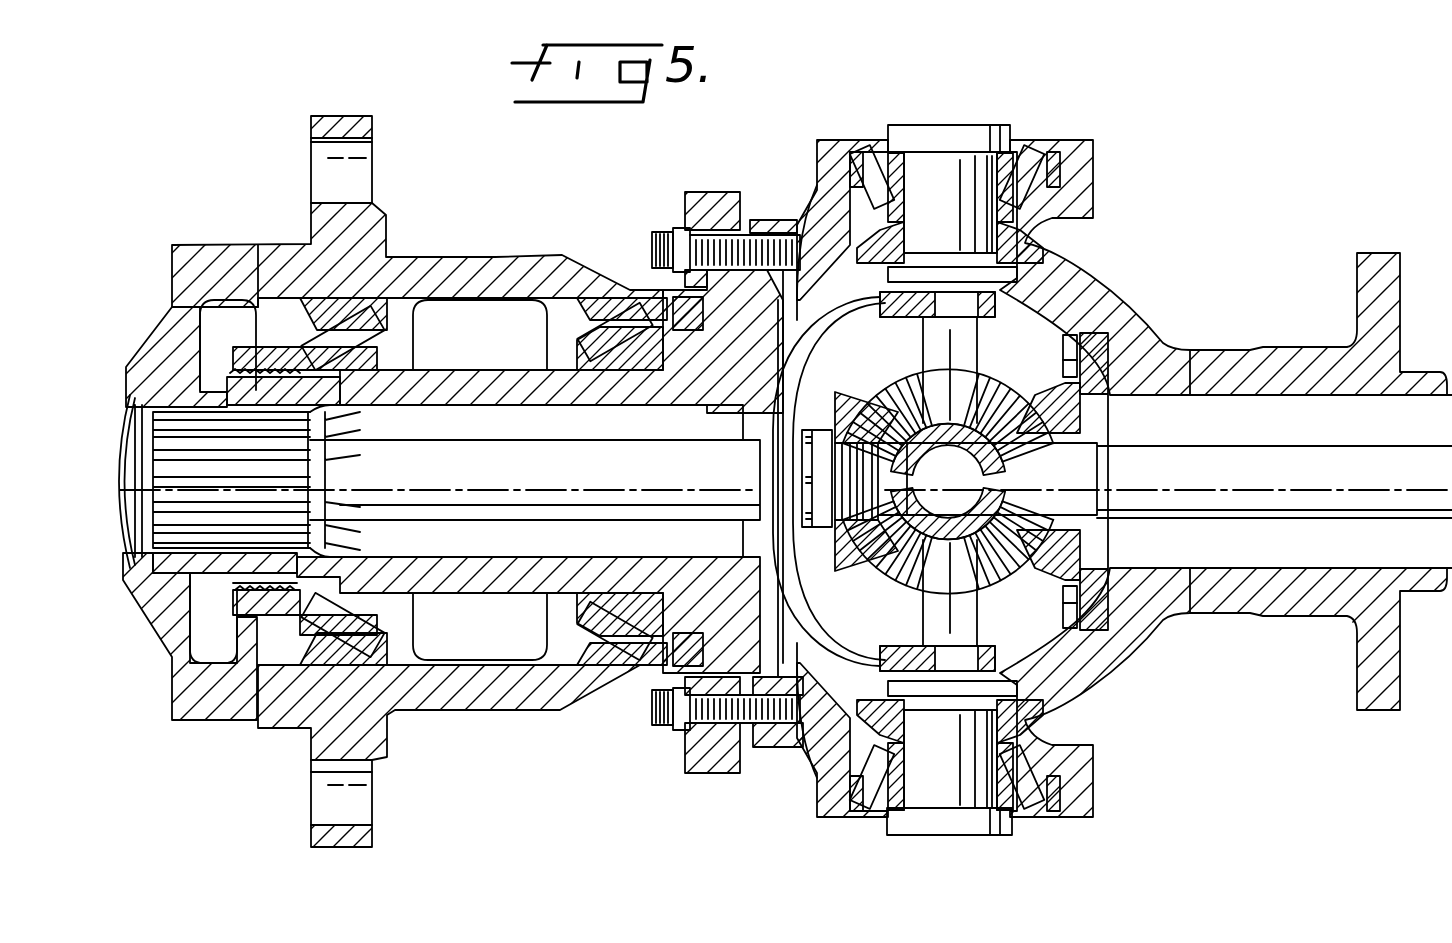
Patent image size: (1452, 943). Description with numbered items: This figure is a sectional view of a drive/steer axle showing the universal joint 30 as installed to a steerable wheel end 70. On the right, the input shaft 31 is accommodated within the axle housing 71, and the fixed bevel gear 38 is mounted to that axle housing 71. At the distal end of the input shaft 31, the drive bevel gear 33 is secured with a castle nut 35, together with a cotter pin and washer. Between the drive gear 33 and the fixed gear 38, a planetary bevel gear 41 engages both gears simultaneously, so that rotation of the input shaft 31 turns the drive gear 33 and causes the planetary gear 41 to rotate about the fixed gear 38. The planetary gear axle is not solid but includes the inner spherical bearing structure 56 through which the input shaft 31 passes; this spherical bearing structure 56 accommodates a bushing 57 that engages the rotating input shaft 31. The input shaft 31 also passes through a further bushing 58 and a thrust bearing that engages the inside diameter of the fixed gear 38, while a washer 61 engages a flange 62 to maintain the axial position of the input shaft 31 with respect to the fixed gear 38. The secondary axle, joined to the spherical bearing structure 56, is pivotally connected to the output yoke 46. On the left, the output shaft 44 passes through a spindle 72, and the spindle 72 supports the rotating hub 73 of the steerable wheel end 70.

The joint 30 is at (1000, 346).
The input shaft 31 is at (1430, 436).
The drive bevel gear 33 is at (847, 557).
The castle nut 35 is at (797, 438).
The fixed bevel gear 38 is at (1058, 405).
The planetary bevel gear 41 is at (913, 590).
The output shaft 44 is at (621, 500).
The output yoke 46 is at (823, 327).
The spherical bearing structure 56 is at (977, 600).
The bushing 57 is at (925, 445).
The bushing 58 is at (1010, 573).
The washer 61 is at (1090, 427).
The flange 62 is at (1095, 532).
The steerable wheel end 70 is at (470, 228).
The axle housing 71 is at (1244, 347).
The spindle 72 is at (462, 596).
The rotating hub 73 is at (507, 252).